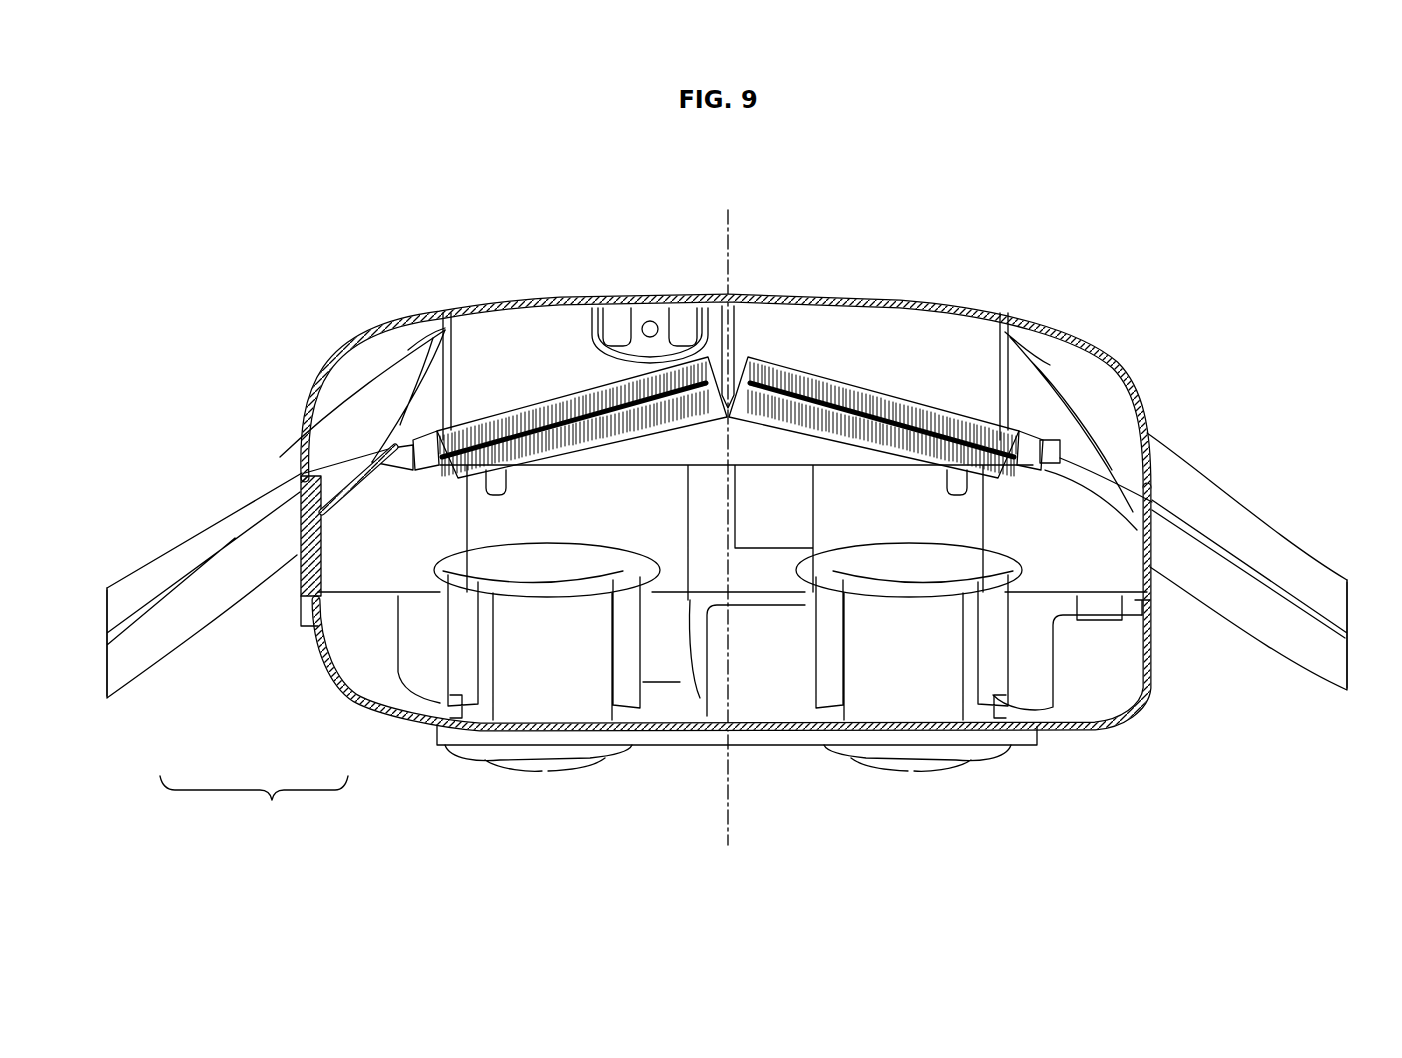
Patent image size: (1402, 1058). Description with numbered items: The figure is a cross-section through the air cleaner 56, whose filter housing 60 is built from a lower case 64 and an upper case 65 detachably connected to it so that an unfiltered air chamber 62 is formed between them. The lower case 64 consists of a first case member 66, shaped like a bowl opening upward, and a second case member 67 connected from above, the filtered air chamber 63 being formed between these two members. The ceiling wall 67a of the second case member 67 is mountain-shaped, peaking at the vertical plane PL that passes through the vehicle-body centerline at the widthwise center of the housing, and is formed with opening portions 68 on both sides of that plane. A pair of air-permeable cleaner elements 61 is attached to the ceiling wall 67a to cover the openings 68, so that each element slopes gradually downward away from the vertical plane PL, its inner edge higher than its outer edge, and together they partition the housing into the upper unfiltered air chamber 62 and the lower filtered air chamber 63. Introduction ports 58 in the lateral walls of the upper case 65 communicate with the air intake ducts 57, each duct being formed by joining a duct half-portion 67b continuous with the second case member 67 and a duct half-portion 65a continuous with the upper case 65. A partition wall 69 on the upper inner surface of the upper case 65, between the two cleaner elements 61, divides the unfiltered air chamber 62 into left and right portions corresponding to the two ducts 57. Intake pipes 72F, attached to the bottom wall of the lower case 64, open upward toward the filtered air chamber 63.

The air cleaner 56 is at (1100, 343).
The air intake duct 57 is at (125, 355).
The introduction port 58 is at (447, 325).
The filter housing 60 is at (768, 752).
The cleaner element 61 is at (553, 388).
The unfiltered air chamber 62 is at (728, 402).
The filtered air chamber 63 is at (732, 587).
The lower case 64 is at (254, 806).
The upper case 65 is at (578, 304).
The duct half-portion 65a is at (172, 550).
The first case member 66 is at (336, 688).
The second case member 67 is at (262, 598).
The ceiling wall 67a is at (367, 473).
The duct half-portion 67b is at (218, 583).
The opening portion 68 is at (467, 433).
The partition wall 69 is at (730, 333).
The intake pipe 72F is at (553, 565).
The vertical plane PL is at (735, 690).